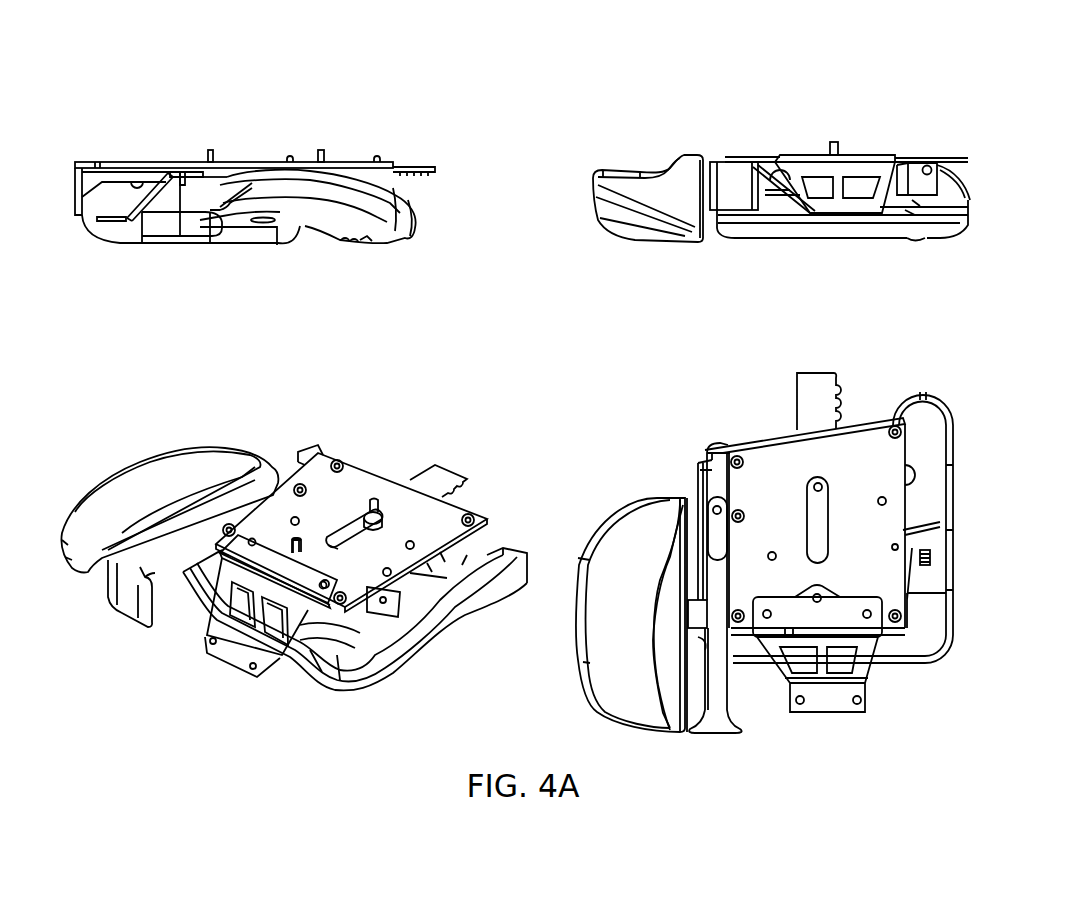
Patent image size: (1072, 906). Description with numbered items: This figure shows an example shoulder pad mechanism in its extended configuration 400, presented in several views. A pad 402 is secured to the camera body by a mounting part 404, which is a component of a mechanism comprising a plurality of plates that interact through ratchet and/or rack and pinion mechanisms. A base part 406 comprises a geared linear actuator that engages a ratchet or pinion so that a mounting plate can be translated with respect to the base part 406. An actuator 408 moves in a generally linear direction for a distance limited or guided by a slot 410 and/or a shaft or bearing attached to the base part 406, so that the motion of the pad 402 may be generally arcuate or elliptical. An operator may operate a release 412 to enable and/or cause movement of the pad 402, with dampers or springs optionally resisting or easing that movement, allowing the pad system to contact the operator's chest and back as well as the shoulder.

The extended configuration 400 is at (392, 93).
The pad 402 is at (327, 222).
The mounting part 404 is at (820, 373).
The base part 406 is at (760, 460).
The actuator 408 is at (822, 487).
The slot 410 is at (895, 548).
The release 412 is at (705, 470).